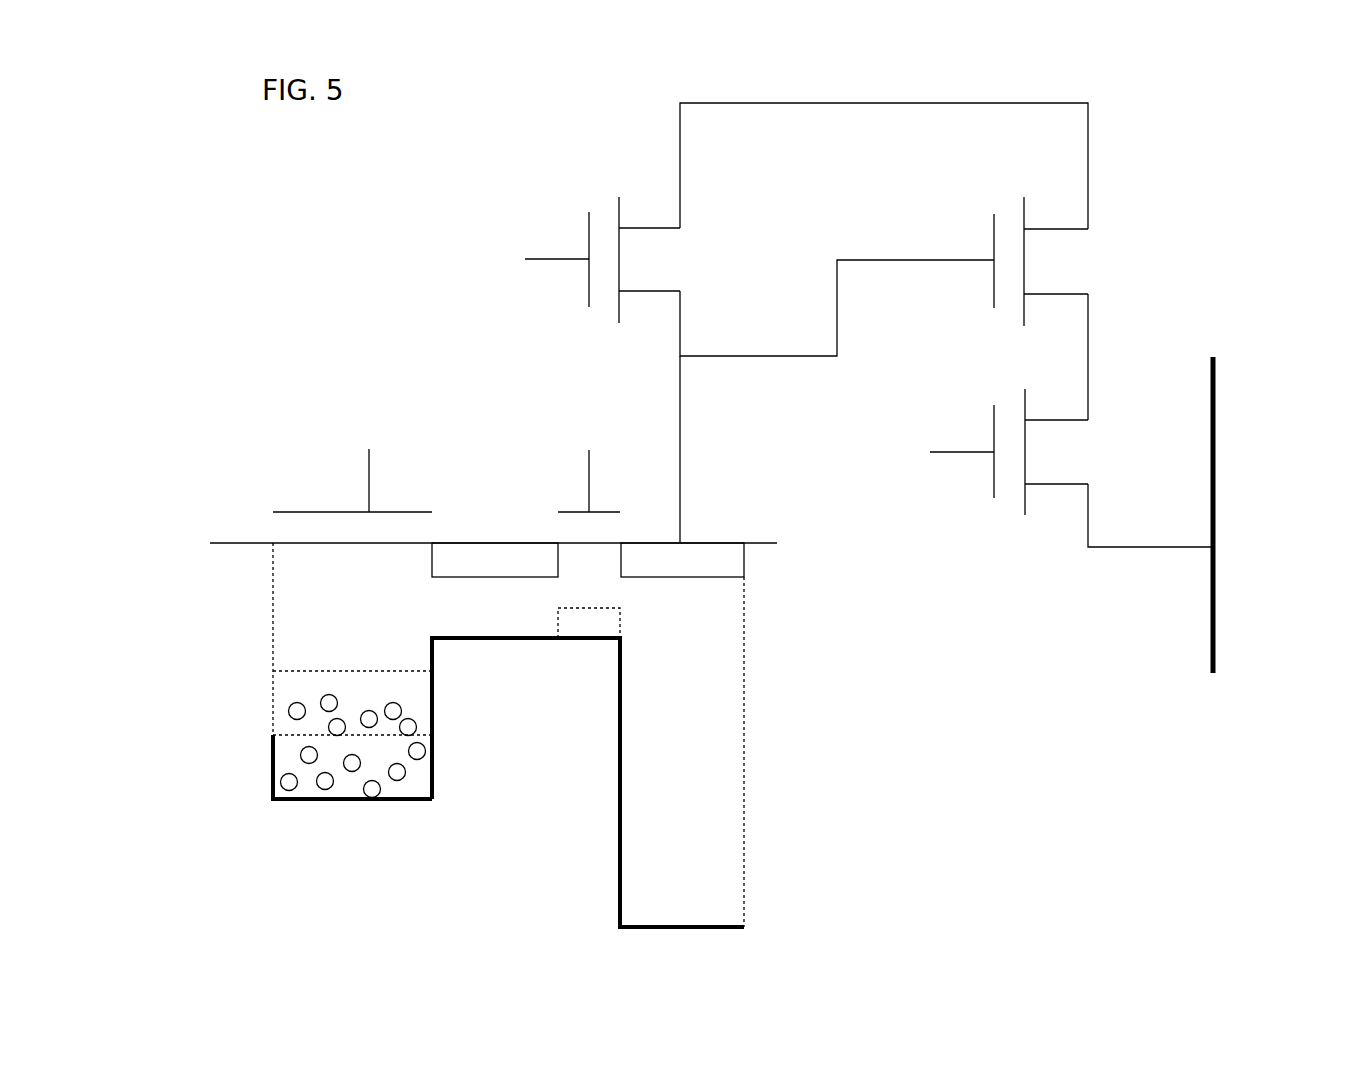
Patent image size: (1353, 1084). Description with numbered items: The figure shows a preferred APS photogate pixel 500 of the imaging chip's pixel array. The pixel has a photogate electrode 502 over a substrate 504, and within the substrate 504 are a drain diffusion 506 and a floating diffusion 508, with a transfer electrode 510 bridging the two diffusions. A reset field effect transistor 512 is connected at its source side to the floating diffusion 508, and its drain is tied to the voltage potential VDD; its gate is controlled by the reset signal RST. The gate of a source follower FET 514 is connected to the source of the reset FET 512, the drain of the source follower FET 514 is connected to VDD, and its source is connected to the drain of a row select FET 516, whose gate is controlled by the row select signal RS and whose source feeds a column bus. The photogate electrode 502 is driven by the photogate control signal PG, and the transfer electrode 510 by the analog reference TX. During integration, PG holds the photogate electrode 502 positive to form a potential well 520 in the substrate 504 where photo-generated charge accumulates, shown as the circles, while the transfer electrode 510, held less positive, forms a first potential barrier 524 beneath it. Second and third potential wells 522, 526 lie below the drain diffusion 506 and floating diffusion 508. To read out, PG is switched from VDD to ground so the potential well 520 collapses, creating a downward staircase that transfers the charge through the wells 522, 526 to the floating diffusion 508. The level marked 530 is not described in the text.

The APS photogate pixel 500 is at (337, 289).
The photogate electrode 502 is at (306, 512).
The substrate 504 is at (210, 577).
The drain diffusion 506 is at (448, 577).
The floating diffusion 508 is at (713, 577).
The transfer electrode 510 is at (573, 512).
The reset field effect transistor 512 is at (589, 225).
The source follower FET 514 is at (994, 227).
The row select FET 516 is at (994, 485).
The potential well 520 is at (307, 735).
The second potential well 522 is at (305, 799).
The first potential barrier 524 is at (615, 610).
The third potential well 526 is at (744, 862).
The photogate barrier level 530 is at (307, 671).